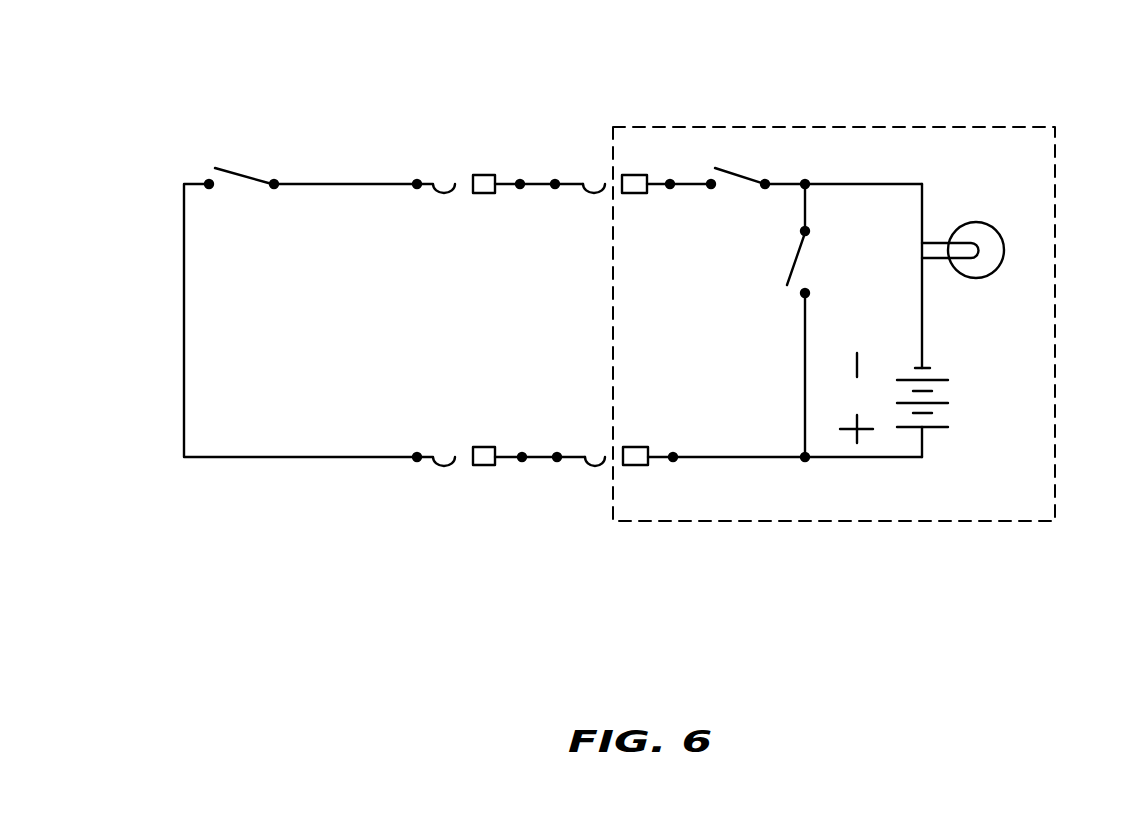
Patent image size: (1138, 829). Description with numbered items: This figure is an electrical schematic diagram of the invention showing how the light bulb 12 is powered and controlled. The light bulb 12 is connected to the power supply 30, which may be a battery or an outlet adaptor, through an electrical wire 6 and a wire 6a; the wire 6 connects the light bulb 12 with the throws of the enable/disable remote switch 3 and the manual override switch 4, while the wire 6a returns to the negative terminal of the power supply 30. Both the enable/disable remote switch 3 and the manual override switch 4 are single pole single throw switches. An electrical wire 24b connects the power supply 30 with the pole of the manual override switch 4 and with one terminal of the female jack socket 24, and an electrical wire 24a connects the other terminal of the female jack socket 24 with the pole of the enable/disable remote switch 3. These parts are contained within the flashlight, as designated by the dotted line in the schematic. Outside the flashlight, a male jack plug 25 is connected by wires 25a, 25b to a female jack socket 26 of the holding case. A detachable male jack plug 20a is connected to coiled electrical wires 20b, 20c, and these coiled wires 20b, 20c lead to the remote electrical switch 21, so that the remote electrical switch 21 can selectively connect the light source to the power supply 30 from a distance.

The enable/disable remote switch 3 is at (740, 172).
The manual override switch 4 is at (786, 265).
The electrical wire 6 is at (870, 183).
The wire 6a is at (922, 327).
The light bulb 12 is at (998, 228).
The detachable male jack plug 20a is at (425, 183).
The coiled electrical wire 20b is at (342, 183).
The coiled electrical wire 20c is at (277, 460).
The remote electrical switch 21 is at (243, 175).
The female jack socket 24 is at (635, 175).
The electrical wire 24a is at (688, 183).
The electrical wire 24b is at (773, 460).
The male jack plug 25 is at (580, 183).
The wire 25a is at (538, 183).
The wire 25b is at (540, 460).
The female jack socket 26 is at (484, 175).
The power supply 30 is at (967, 403).